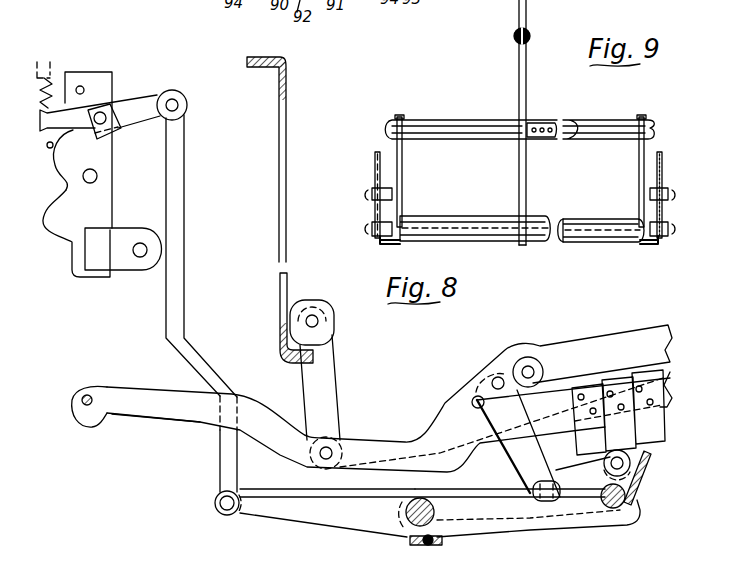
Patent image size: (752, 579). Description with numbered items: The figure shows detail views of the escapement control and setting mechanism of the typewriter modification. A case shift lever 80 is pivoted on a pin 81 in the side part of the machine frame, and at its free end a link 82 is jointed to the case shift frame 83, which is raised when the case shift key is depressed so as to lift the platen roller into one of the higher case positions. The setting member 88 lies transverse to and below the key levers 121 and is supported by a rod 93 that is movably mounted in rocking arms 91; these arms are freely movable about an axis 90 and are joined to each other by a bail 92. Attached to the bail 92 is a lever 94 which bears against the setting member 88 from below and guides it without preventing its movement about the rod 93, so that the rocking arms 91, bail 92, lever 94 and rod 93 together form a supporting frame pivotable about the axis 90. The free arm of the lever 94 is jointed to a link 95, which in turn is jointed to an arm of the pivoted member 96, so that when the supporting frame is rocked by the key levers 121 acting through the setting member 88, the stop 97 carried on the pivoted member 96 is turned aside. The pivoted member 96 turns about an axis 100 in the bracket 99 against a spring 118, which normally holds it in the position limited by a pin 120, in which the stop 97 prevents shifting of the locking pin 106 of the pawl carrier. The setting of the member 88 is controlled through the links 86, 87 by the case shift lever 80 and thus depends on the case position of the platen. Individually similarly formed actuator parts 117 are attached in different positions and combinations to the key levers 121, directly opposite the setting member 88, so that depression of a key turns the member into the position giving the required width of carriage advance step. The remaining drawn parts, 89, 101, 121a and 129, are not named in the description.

In FIG. 8, the case shift lever 80 is at (389, 431).
In FIG. 8, the pin 81 is at (528, 360).
In FIG. 8, the link 82 is at (331, 398).
In FIG. 8, the case shift frame 83 is at (287, 286).
In FIG. 9, the link 86 is at (377, 158).
In FIG. 8, the link 86 is at (514, 466).
In FIG. 9, the link 87 is at (380, 207).
In FIG. 8, the link 87 is at (555, 470).
In FIG. 9, the setting member 88 is at (503, 238).
In FIG. 8, the setting member 88 is at (629, 470).
In FIG. 9, the hatched arm 89 is at (389, 242).
In FIG. 8, the hatched arm 89 is at (651, 462).
In FIG. 9, the axis 90 is at (471, 128).
In FIG. 8, the axis 90 is at (420, 497).
In FIG. 9, the rocking arm 91 is at (402, 177).
In FIG. 8, the rocking arm 91 is at (480, 489).
In FIG. 9, the bail 92 is at (546, 121).
In FIG. 8, the bail 92 is at (414, 546).
In FIG. 9, the rod 93 is at (570, 224).
In FIG. 8, the rod 93 is at (632, 497).
In FIG. 9, the lever 94 is at (527, 90).
In FIG. 8, the lever 94 is at (290, 520).
In FIG. 9, the link 95 is at (532, 22).
In FIG. 8, the pivoted member 96 is at (145, 98).
In FIG. 8, the stop 97 is at (55, 168).
In FIG. 8, the bracket 99 is at (55, 220).
In FIG. 8, the axis 100 is at (110, 120).
In FIG. 8, the pin 101 is at (98, 176).
In FIG. 8, the locking pin 106 is at (47, 148).
In FIG. 8, the actuator part 117 is at (575, 432).
In FIG. 8, the spring 118 is at (50, 63).
In FIG. 8, the pin 120 is at (83, 88).
In FIG. 8, the key lever 121 is at (672, 387).
In FIG. 8, the lever bar 121a is at (162, 413).
In FIG. 8, the pivot block 129 is at (138, 258).